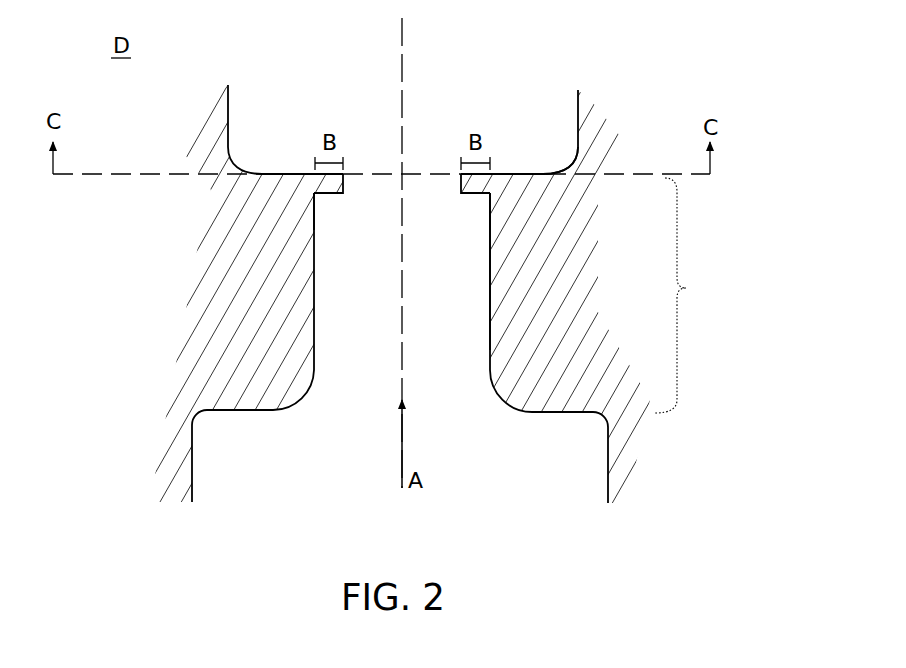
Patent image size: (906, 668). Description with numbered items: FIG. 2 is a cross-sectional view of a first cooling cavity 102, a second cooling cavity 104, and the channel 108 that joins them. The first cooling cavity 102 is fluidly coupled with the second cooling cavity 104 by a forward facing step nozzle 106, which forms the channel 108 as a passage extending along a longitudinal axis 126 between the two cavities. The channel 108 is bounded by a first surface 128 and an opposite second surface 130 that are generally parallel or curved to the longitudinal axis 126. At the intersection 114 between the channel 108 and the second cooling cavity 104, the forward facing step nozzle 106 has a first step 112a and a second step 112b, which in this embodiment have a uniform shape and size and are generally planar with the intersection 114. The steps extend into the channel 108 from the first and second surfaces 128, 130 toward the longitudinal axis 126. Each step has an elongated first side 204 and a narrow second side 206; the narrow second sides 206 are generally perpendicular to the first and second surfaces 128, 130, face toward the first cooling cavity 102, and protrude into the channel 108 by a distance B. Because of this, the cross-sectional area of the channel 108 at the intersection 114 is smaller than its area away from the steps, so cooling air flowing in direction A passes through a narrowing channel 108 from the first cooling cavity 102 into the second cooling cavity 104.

The first cooling cavity 102 is at (549, 486).
The second cooling cavity 104 is at (539, 97).
The forward facing step nozzle 106 is at (423, 193).
The channel 108 is at (687, 287).
The first step 112a is at (328, 178).
The second step 112b is at (493, 176).
The intersection 114 is at (538, 172).
The longitudinal axis 126 is at (404, 62).
The first surface 128 is at (492, 265).
The second surface 130 is at (314, 276).
The elongated first side 204 is at (343, 186).
The narrow second side 206 is at (314, 213).